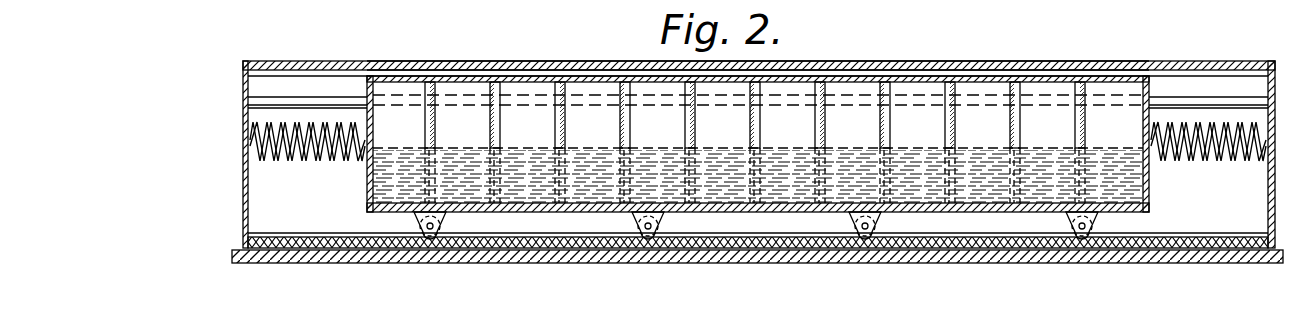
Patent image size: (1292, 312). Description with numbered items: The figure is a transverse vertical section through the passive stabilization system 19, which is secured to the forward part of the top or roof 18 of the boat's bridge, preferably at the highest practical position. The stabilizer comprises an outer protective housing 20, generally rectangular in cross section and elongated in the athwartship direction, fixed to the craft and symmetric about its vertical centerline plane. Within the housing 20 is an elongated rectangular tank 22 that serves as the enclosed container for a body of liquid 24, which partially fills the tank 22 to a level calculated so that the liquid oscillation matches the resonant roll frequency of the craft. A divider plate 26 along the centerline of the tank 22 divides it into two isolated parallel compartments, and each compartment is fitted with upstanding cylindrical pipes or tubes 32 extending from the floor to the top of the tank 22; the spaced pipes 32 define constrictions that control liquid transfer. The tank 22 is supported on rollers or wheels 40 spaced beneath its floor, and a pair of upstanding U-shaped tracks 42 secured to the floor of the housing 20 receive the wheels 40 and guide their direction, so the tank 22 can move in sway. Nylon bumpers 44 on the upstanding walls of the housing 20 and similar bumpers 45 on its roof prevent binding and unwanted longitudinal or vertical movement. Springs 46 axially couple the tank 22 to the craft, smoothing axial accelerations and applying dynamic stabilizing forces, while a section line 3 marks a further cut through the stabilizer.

The section line 3- 3 is at (367, 87).
The top or roof 18 is at (607, 260).
The passive stabilization system 19 is at (349, 55).
The outer protective housing 20 is at (465, 61).
The elongated rectangular tank 22 is at (930, 80).
The body of liquid 24 is at (727, 157).
The divider plate 26 is at (993, 115).
The upstanding cylindrical pipes or tubes 32 is at (624, 124).
The rollers or wheels 40 is at (443, 236).
The upstanding U-shaped tracks 42 is at (707, 242).
The nylon bumpers 44 is at (248, 105).
The bumpers 45 is at (1192, 77).
The springs 46 is at (327, 163).